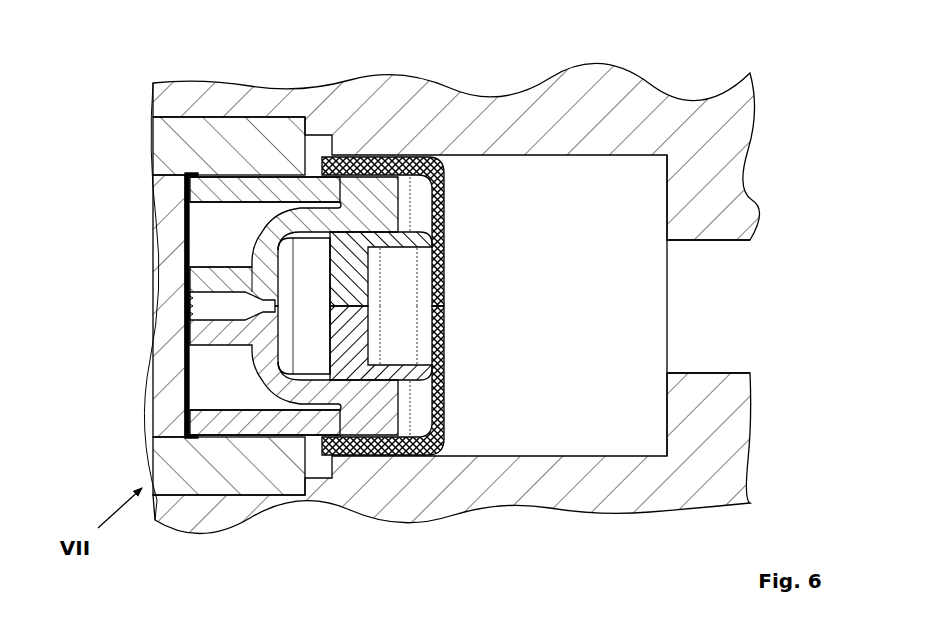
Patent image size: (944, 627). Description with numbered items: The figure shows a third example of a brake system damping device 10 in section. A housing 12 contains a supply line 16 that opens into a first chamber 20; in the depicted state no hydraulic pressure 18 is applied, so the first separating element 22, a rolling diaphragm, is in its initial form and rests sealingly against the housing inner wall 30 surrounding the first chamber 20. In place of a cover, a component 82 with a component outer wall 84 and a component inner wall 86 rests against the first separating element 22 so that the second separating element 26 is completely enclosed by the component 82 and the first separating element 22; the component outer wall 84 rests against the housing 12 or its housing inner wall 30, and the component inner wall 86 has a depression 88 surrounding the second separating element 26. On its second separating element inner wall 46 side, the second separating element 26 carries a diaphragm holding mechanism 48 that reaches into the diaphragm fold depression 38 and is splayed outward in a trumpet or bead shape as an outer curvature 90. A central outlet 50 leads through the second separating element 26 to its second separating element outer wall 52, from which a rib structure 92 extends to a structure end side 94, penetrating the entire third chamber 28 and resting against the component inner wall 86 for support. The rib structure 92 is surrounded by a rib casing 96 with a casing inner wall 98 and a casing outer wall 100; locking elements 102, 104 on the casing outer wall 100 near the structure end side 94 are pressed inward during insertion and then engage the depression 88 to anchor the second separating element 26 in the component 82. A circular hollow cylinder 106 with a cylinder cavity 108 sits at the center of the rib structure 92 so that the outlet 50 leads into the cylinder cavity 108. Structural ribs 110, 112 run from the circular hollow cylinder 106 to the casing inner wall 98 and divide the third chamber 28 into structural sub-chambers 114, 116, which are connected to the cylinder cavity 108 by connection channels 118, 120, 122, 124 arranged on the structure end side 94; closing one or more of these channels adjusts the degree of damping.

The brake system damping device 10 is at (772, 68).
The housing 12 is at (718, 118).
The supply line 16 is at (740, 262).
The hydraulic pressure 18 is at (722, 325).
The first chamber 20 is at (648, 432).
The first separating element 22 is at (370, 164).
The second separating element 26 is at (335, 190).
The third chamber 28 is at (318, 418).
The housing inner wall 30 is at (615, 157).
The diaphragm fold depression 38 is at (438, 197).
The second separating element inner wall 46 is at (428, 350).
The diaphragm holding mechanism 48 is at (432, 222).
The outlet 50 is at (415, 307).
The second separating element outer wall 52 is at (345, 458).
The component 82 is at (276, 168).
The component outer wall 84 is at (235, 145).
The component inner wall 86 is at (207, 183).
The depression 88 is at (183, 183).
The outer curvature 90 is at (441, 178).
The rib structure 92 is at (172, 238).
The structure end side 94 is at (178, 205).
The rib casing 96 is at (268, 428).
The casing inner wall 98 is at (425, 250).
The casing outer wall 100 is at (245, 468).
The locking element 102 is at (182, 168).
The locking element 104 is at (190, 498).
The circular hollow cylinder 106 is at (210, 352).
The cylinder cavity 108 is at (405, 278).
The structural rib 110 is at (200, 262).
The structural rib 112 is at (181, 428).
The structural sub-chamber 114 is at (212, 228).
The structural sub-chamber 116 is at (210, 388).
The connection channel 118 is at (200, 282).
The connection channel 120 is at (190, 304).
The connection channel 122 is at (190, 312).
The connection channel 124 is at (190, 333).